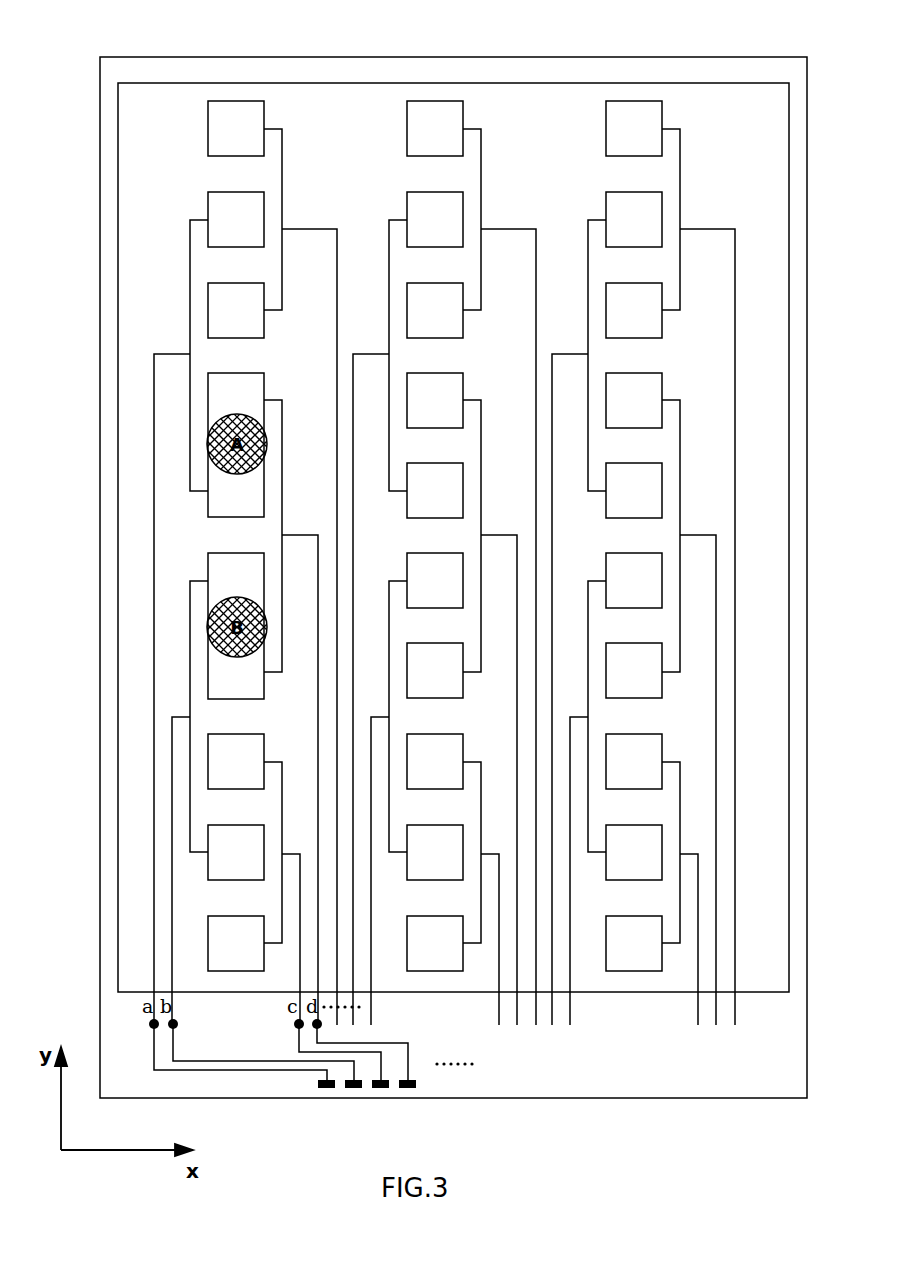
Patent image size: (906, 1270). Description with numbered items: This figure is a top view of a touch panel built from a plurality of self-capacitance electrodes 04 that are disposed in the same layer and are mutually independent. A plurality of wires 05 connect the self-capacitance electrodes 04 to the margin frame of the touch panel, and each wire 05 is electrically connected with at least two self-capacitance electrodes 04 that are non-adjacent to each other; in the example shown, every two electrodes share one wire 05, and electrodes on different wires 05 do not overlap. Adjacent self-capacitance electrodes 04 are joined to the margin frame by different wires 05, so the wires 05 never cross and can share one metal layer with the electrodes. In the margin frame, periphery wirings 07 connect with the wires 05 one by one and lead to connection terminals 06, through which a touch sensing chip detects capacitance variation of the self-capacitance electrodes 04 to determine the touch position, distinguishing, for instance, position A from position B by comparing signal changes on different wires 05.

The self-capacitance electrode 04 is at (234, 101).
The wire 05 is at (155, 895).
The connection terminal 06 is at (323, 1087).
The periphery wiring 07 is at (250, 1070).